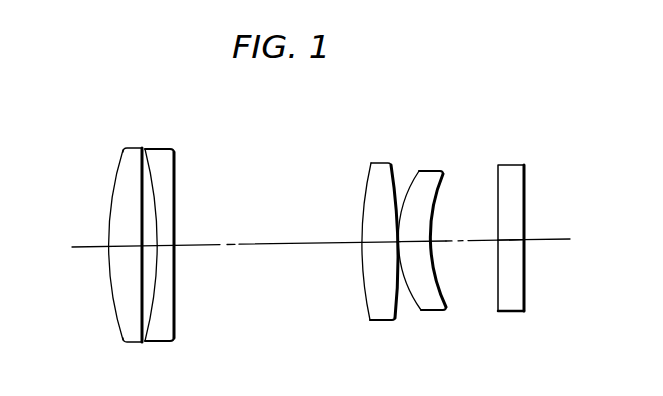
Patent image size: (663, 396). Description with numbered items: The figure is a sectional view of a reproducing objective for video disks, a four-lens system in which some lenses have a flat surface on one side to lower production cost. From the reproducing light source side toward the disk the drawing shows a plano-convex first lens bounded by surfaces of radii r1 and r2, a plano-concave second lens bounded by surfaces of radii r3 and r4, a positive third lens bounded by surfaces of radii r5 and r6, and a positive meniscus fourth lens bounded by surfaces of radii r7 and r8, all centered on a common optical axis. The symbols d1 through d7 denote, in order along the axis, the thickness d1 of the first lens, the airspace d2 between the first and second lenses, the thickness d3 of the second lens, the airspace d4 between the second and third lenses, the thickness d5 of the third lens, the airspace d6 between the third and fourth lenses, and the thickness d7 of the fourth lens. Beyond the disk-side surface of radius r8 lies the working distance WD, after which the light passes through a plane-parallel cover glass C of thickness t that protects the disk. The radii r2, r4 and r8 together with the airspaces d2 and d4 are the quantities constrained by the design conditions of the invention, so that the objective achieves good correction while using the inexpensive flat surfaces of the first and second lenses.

The radius of curvature of the first surface of the first lens r1 is at (122, 335).
The radius of curvature of the disk-side surface of the first lens r2 is at (140, 327).
The radius of curvature of the first surface of the second lens r3 is at (150, 325).
The radius of curvature of the disk-side surface of the second lens r4 is at (177, 325).
The radius of curvature of the first surface of the third lens r5 is at (370, 308).
The radius of curvature of the disk-side surface of the third lens r6 is at (397, 305).
The radius of curvature of the first surface of the fourth lens r7 is at (421, 309).
The radius of curvature of the disk-side surface of the fourth lens r8 is at (445, 293).
The thickness of the first lens d1 is at (110, 229).
The airspace between the first and second lenses d2 is at (140, 237).
The thickness of the second lens d3 is at (175, 223).
The airspace between the second and third lenses d4 is at (275, 243).
The thickness of the third lens d5 is at (379, 239).
The airspace between the third and fourth lenses d6 is at (397, 215).
The thickness of the fourth lens d7 is at (428, 174).
The working distance WD is at (472, 240).
The thickness of the cover glass t is at (513, 238).
The cover glass C is at (513, 298).